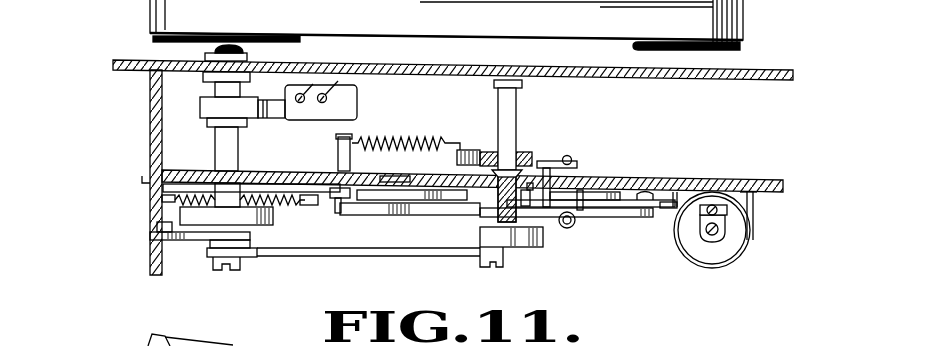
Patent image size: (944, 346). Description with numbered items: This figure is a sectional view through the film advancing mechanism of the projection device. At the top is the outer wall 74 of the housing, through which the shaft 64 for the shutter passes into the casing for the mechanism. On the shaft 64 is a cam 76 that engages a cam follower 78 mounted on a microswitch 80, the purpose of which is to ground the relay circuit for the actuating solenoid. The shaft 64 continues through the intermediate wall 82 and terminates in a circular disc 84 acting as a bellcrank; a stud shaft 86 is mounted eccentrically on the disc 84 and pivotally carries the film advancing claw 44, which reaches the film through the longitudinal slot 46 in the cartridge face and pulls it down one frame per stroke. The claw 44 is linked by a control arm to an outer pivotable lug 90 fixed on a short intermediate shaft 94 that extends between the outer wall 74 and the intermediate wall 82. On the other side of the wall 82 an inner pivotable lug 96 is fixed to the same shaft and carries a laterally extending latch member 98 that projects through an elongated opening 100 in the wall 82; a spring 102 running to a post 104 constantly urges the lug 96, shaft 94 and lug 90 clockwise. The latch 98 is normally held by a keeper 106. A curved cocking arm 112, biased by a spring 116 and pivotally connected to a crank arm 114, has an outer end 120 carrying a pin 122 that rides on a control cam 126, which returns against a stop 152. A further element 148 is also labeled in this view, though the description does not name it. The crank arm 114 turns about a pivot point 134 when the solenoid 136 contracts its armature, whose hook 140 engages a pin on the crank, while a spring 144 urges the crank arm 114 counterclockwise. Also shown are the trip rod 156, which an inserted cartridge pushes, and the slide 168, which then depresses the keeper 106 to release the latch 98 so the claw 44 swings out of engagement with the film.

The film advancing claw 44 is at (253, 252).
The longitudinal slot 46 is at (147, 240).
The shaft 64 is at (239, 150).
The outer wall 74 is at (793, 75).
The cam 76 is at (204, 108).
The cam follower 78 is at (272, 108).
The microswitch 80 is at (357, 100).
The intermediate wall 82 is at (778, 180).
The circular disc 84 is at (273, 212).
The stud shaft 86 is at (178, 216).
The outer pivotable lug 90 is at (533, 210).
The intermediate shaft 94 is at (517, 105).
The inner pivotable lug 96 is at (483, 104).
The latch member 98 is at (530, 160).
The elongated opening 100 is at (487, 150).
The spring 102 is at (410, 128).
The post 104 is at (338, 160).
The keeper 106 is at (572, 192).
The curved cocking arm 112 is at (622, 264).
The crank arm 114 is at (675, 200).
The spring 116 is at (624, 217).
The outer end 120 is at (365, 215).
The pin 122 is at (348, 200).
The control cam 126 is at (430, 200).
The pivot point 134 is at (650, 187).
The solenoid 136 is at (733, 252).
The hook 140 is at (727, 222).
The spring 144 is at (707, 214).
The pivot pin 148 is at (573, 223).
The stop 152 is at (396, 176).
The trip rod 156 is at (131, 167).
The slide 168 is at (565, 158).